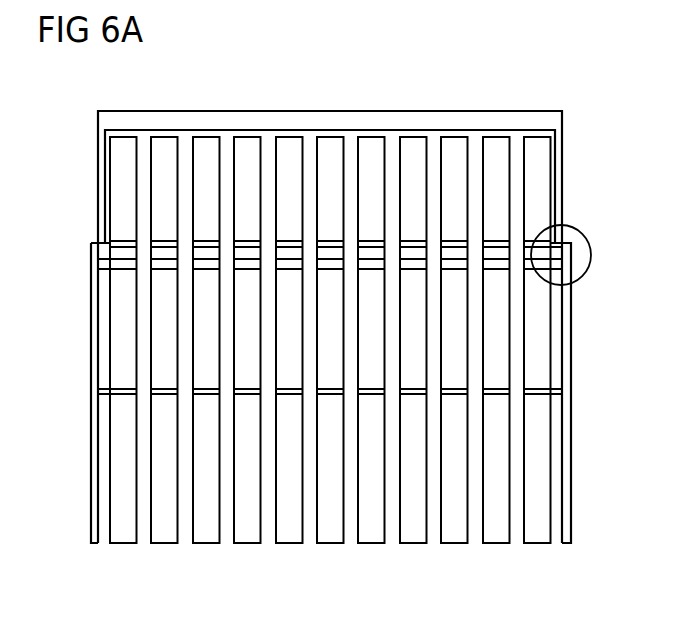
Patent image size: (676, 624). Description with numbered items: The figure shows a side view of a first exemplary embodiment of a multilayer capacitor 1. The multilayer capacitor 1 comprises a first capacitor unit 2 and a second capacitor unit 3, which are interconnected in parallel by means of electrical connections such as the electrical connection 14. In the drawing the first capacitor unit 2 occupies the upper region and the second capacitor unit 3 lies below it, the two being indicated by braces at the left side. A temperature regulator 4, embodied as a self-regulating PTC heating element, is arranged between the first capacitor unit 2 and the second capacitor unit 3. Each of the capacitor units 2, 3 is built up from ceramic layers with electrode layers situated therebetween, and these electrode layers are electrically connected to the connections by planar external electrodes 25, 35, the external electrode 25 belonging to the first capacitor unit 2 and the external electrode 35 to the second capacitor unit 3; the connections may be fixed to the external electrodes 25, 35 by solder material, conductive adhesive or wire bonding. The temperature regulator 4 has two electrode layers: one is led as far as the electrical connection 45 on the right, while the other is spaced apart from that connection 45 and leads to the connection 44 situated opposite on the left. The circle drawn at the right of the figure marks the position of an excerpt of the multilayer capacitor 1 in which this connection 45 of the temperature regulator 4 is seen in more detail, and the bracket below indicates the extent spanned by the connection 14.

The multilayer capacitor 1 is at (512, 87).
The first capacitor unit 2 is at (83, 132).
The second capacitor unit 3 is at (83, 273).
The temperature regulator 4 is at (393, 255).
The electrical connection 14 is at (91, 551).
The external electrode 25 is at (518, 185).
The external electrode 35 is at (518, 353).
The connection 44 is at (92, 445).
The electrical connection 45 is at (572, 441).